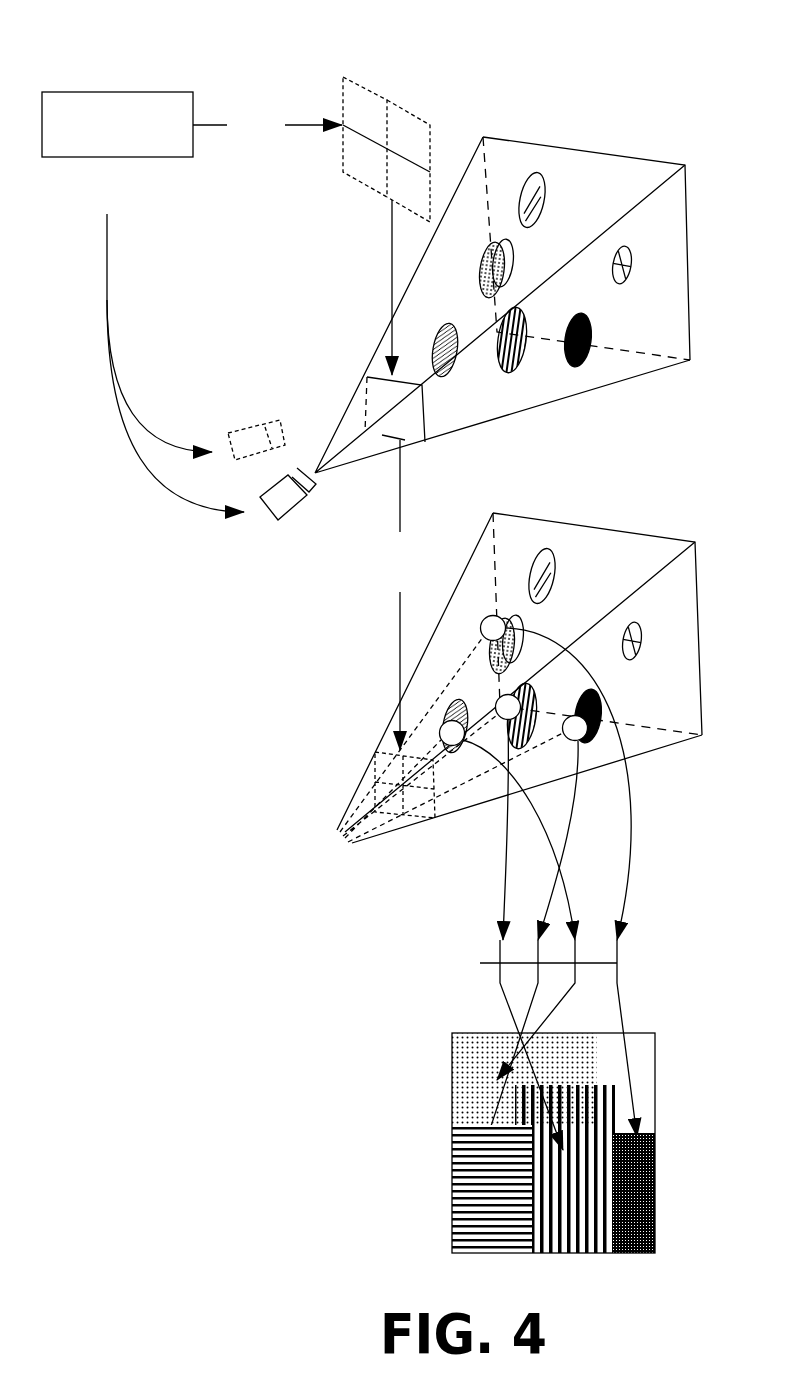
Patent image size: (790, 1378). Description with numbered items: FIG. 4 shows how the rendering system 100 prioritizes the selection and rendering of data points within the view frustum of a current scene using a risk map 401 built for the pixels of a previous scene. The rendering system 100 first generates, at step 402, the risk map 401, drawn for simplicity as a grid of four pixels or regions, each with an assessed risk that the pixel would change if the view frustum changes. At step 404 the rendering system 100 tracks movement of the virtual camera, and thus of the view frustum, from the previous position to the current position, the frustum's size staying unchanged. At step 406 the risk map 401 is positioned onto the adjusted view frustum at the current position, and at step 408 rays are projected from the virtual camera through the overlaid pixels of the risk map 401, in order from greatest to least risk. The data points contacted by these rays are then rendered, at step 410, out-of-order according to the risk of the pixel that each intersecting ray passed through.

The rendering system 100 is at (117, 124).
The risk map 401 is at (343, 76).
The risk map generation step 402 is at (267, 125).
The view frustum movement tracking step 404 is at (198, 338).
The risk map positioning step 406 is at (400, 595).
The ray projection step 408 is at (497, 697).
The out-of-order rendering step 410 is at (537, 940).